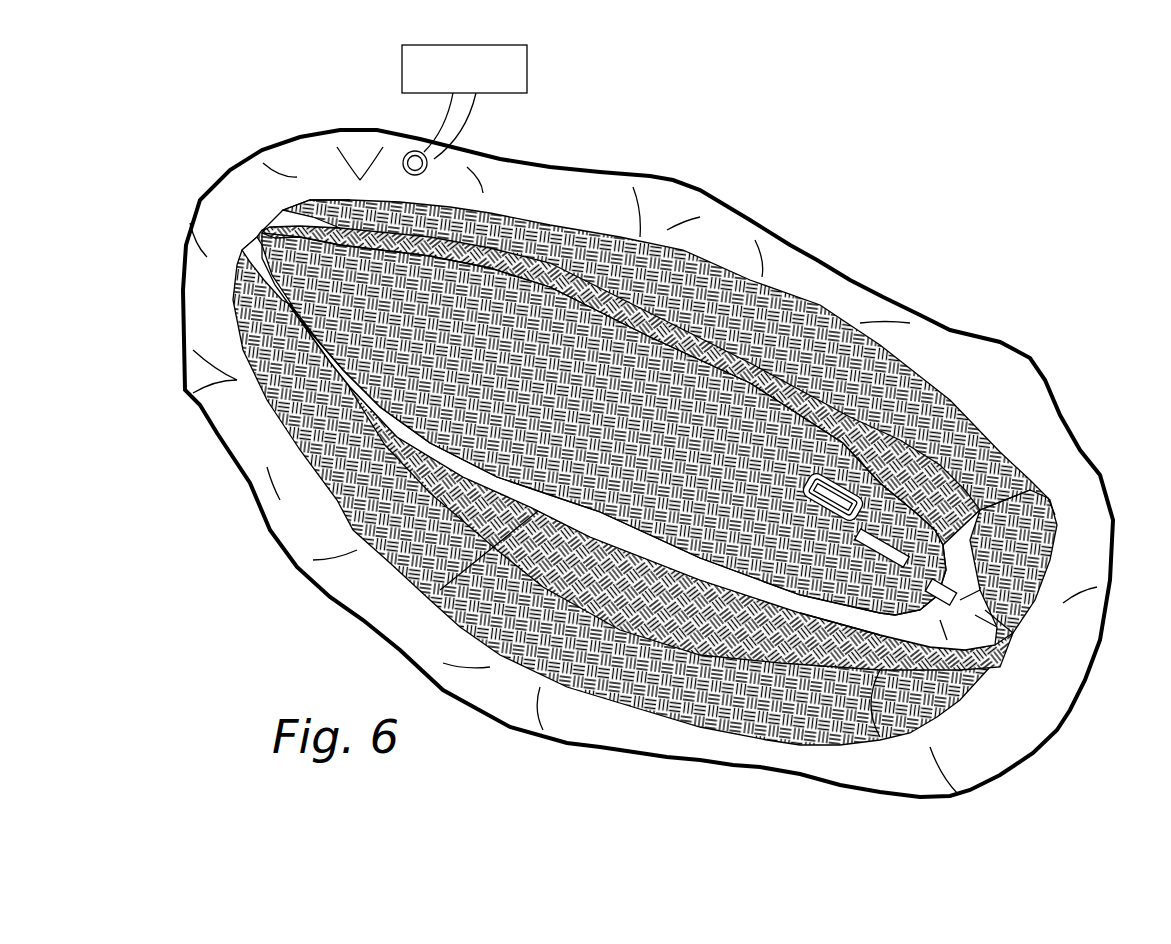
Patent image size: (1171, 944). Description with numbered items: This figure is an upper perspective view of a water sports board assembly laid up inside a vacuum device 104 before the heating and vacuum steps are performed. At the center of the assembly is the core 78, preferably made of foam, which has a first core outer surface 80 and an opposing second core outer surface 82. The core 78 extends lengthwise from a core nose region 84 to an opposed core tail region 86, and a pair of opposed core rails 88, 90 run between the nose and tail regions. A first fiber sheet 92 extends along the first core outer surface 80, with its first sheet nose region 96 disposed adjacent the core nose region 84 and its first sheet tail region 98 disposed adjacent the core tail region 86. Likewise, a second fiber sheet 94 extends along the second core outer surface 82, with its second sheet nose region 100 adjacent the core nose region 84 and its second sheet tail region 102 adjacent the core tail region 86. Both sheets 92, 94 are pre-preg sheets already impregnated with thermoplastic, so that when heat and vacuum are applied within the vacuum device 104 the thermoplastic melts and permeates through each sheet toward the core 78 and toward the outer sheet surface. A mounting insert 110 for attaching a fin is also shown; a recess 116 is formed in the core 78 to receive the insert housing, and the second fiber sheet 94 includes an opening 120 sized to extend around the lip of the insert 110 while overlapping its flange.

The core 78 is at (830, 615).
The first core outer surface 80 is at (940, 620).
The second core outer surface 82 is at (975, 573).
The core nose region 84 is at (290, 228).
The core tail region 86 is at (960, 600).
The core rail 88 is at (427, 597).
The core rail 90 is at (535, 275).
The first fiber sheet 92 is at (752, 732).
The second fiber sheet 94 is at (449, 277).
The first sheet nose region 96 is at (270, 297).
The first sheet tail region 98 is at (975, 615).
The second sheet nose region 100 is at (258, 232).
The second sheet tail region 102 is at (962, 497).
The vacuum device 104 is at (293, 563).
The mounting insert 110 is at (832, 462).
The recess 116 is at (985, 610).
The opening 120 is at (905, 548).